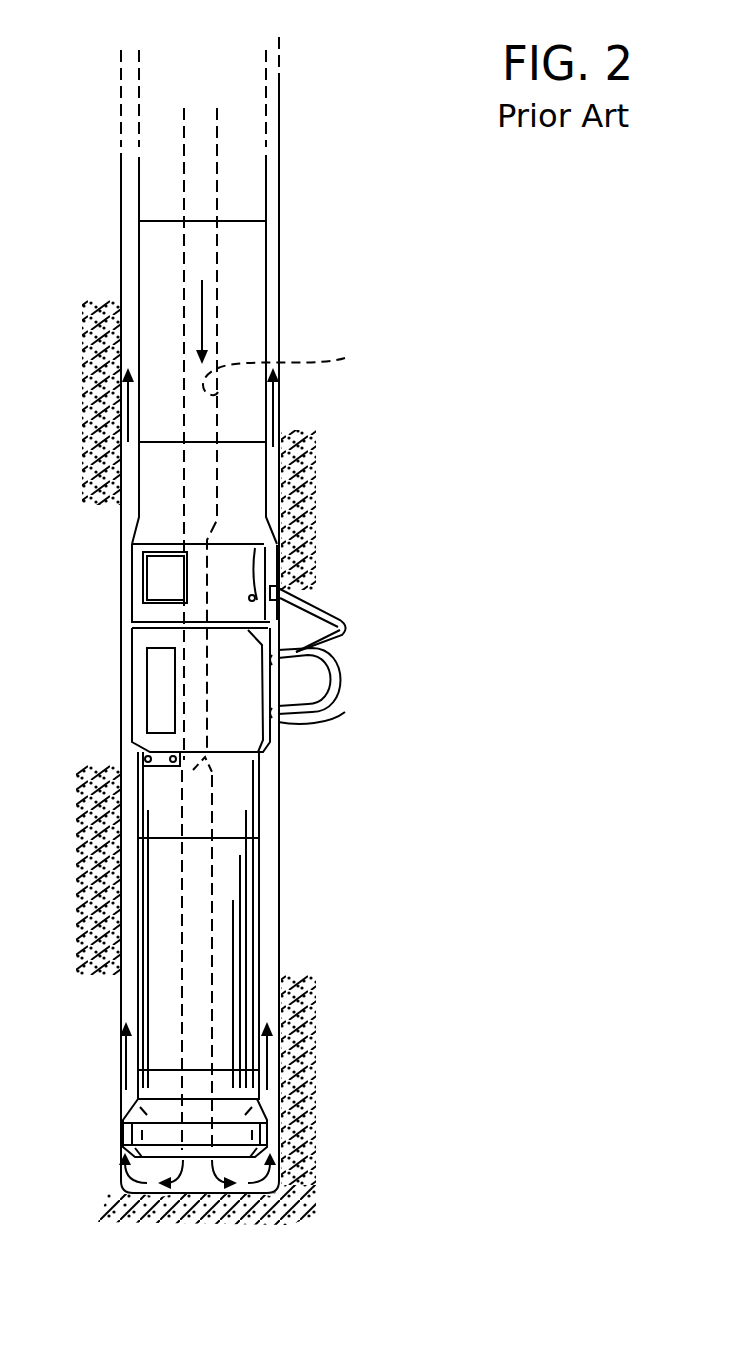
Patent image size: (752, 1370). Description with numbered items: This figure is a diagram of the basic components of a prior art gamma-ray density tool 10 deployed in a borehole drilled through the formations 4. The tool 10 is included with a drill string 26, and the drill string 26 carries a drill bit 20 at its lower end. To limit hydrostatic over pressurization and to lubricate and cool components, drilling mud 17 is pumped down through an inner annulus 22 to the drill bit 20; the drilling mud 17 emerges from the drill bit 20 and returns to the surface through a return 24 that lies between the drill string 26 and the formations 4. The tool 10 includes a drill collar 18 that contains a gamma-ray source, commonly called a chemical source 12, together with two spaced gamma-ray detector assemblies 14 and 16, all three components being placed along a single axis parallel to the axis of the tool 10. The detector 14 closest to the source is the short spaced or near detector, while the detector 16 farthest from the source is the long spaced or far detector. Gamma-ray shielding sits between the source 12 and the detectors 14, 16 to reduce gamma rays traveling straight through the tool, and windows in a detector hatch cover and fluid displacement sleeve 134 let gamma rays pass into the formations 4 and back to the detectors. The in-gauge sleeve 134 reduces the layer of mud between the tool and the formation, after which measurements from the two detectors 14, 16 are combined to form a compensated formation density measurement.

The formations 4 is at (279, 1047).
The gamma-ray density tool 10 is at (240, 788).
The chemical source 12 is at (298, 598).
The short spaced detector 14 is at (280, 672).
The long spaced detector 16 is at (280, 724).
The drilling mud 17 is at (218, 267).
The drill collar 18 is at (266, 184).
The drill bit 20 is at (238, 1132).
The inner annulus 22 is at (286, 359).
The return 24 is at (275, 322).
The drill string 26 is at (252, 262).
The fluid displacement sleeve 134 is at (147, 638).